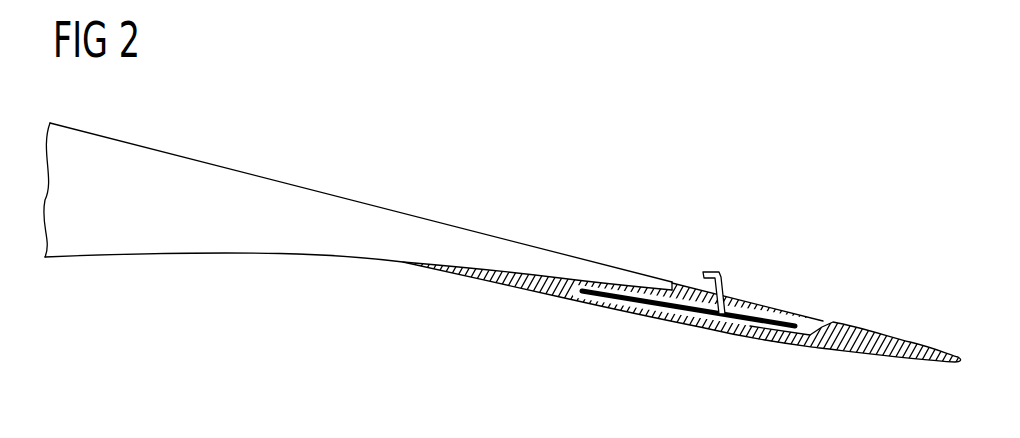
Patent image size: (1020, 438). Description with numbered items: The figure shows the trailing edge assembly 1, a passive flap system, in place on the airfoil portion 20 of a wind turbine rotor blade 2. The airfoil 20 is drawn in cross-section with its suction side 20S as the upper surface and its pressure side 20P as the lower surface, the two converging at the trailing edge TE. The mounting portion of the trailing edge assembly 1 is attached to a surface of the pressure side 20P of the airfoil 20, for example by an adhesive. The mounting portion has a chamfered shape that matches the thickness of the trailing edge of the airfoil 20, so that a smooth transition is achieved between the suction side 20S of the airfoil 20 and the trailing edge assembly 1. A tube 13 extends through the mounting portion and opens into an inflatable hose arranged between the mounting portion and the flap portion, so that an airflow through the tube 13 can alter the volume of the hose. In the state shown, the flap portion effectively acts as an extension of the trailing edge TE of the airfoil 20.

The trailing edge assembly 1 is at (835, 353).
The wind turbine rotor blade 2 is at (448, 209).
The tube 13 is at (721, 281).
The airfoil portion 20 is at (157, 187).
The suction side 20S is at (288, 182).
The pressure side 20P is at (255, 255).
The trailing edge TE is at (665, 285).